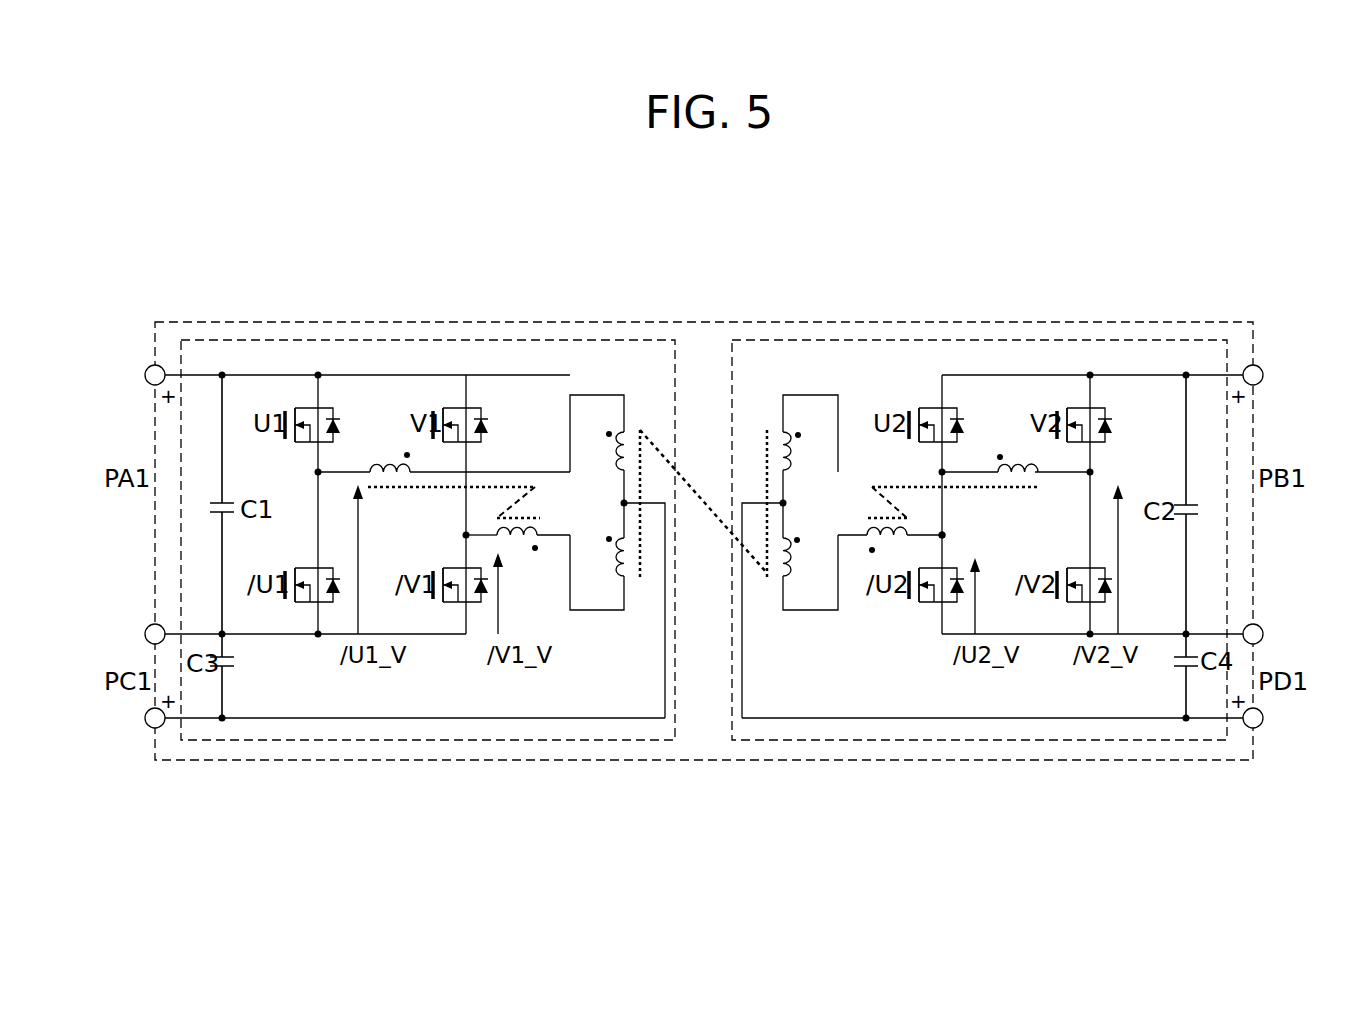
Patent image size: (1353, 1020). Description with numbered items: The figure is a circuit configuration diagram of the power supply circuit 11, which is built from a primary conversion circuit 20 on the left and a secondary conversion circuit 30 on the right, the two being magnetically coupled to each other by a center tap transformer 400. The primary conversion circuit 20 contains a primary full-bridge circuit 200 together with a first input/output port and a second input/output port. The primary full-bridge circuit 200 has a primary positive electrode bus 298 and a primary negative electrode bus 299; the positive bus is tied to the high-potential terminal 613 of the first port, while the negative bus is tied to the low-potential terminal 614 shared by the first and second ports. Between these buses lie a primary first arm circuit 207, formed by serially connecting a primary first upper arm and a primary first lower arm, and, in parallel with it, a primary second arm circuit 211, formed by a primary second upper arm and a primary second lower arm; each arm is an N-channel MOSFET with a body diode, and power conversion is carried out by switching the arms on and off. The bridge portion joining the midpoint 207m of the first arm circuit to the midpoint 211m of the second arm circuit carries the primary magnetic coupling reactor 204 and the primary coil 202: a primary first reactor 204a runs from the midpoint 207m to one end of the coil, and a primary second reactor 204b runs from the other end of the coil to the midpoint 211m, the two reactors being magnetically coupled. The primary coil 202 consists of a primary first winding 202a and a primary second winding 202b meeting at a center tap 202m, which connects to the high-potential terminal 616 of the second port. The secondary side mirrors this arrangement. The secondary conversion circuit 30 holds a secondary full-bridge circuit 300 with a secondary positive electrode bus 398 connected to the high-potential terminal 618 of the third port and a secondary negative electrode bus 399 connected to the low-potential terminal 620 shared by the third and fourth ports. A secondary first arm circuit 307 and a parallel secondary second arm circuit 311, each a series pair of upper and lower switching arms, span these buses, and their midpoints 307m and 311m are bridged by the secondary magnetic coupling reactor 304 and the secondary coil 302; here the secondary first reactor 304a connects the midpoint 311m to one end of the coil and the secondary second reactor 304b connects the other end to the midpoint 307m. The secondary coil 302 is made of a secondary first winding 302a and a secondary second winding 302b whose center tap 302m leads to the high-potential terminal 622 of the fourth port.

The power supply circuit 11 is at (1128, 322).
The primary conversion circuit 20 is at (417, 326).
The secondary conversion circuit 30 is at (990, 326).
The primary full-bridge circuit 200 is at (517, 340).
The primary coil 202 is at (623, 375).
The primary first winding 202a is at (612, 442).
The primary second winding 202b is at (605, 610).
The center tap 202m is at (622, 503).
The primary magnetic coupling reactor 204 is at (448, 498).
The primary first reactor 204a is at (372, 461).
The primary second reactor 204b is at (527, 548).
The primary first arm circuit 207 is at (303, 624).
The midpoint 207m is at (318, 472).
The primary second arm circuit 211 is at (450, 624).
The midpoint 211m is at (465, 535).
The primary positive electrode bus 298 is at (255, 375).
The primary negative electrode bus 299 is at (253, 636).
The secondary full-bridge circuit 300 is at (890, 340).
The secondary coil 302 is at (785, 377).
The secondary first winding 302a is at (792, 445).
The secondary second winding 302b is at (797, 576).
The center tap 302m is at (785, 503).
The secondary magnetic coupling reactor 304 is at (985, 500).
The secondary first reactor 304a is at (1003, 462).
The secondary second reactor 304b is at (887, 557).
The secondary first arm circuit 307 is at (912, 624).
The midpoint 307m is at (950, 535).
The secondary second arm circuit 311 is at (1053, 624).
The midpoint 311m is at (1090, 471).
The secondary positive electrode bus 398 is at (1118, 375).
The secondary negative electrode bus 399 is at (1148, 636).
The transformer 400 is at (705, 460).
The high-potential terminal 613 is at (147, 367).
The low-potential terminal 614 is at (146, 626).
The high-potential terminal 616 is at (146, 727).
The high-potential terminal 618 is at (1260, 366).
The low-potential terminal 620 is at (1256, 623).
The high-potential terminal 622 is at (1262, 725).